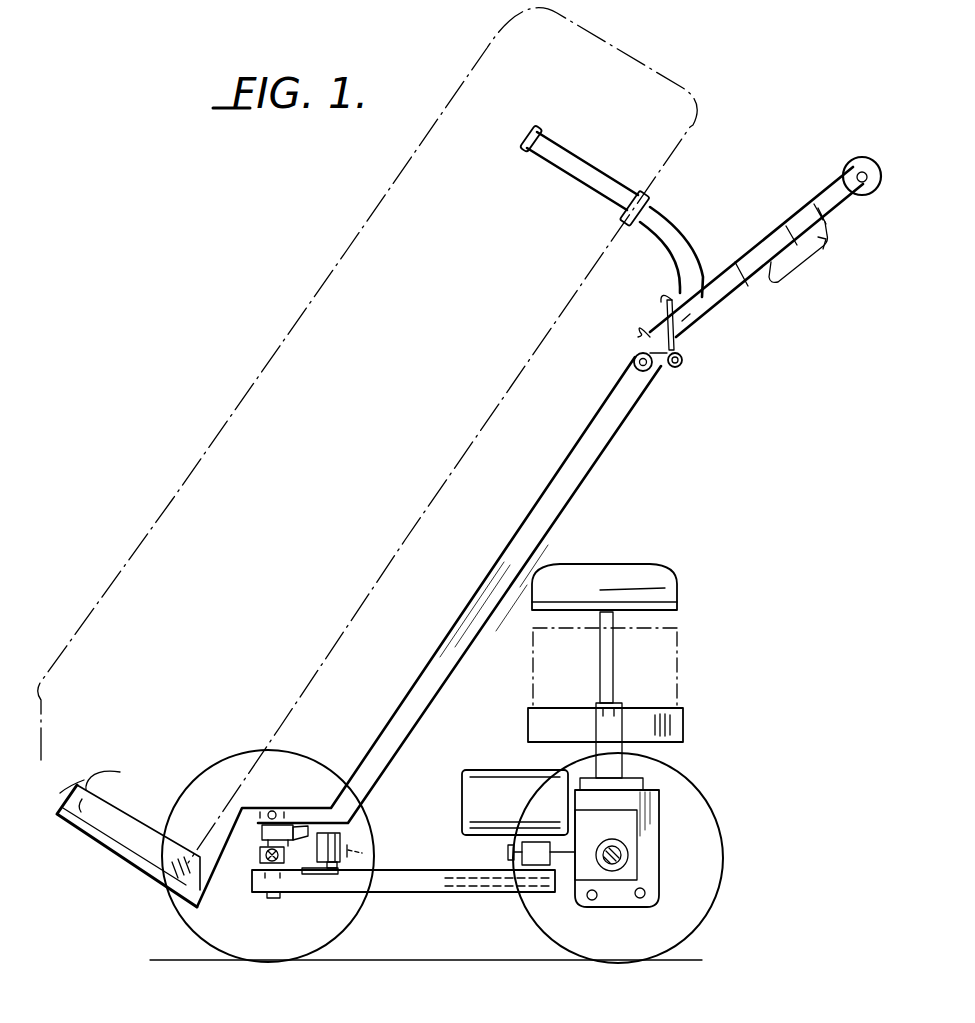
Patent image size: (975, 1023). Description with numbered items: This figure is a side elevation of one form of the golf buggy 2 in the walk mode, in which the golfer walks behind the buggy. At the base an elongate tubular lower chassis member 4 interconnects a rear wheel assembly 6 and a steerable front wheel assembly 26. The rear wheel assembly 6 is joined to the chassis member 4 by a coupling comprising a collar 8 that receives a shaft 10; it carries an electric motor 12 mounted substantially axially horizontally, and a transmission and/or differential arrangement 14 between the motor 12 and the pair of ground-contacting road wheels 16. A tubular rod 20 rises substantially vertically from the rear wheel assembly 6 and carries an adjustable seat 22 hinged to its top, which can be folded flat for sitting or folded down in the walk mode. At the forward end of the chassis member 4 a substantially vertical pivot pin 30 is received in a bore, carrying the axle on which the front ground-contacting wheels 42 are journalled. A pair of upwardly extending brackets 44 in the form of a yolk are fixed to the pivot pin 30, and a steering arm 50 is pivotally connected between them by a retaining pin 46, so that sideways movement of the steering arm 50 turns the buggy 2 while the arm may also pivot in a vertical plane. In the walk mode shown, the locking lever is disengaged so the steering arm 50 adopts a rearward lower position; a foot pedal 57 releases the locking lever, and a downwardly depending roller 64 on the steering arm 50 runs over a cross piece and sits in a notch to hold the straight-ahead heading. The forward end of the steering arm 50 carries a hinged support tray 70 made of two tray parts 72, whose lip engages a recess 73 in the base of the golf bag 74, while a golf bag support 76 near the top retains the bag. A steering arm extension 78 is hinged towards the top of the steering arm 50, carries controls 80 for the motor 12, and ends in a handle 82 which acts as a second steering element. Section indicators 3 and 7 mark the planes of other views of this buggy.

The golf buggy 2 is at (746, 120).
The section line 3- 3 is at (88, 762).
The lower chassis member 4 is at (443, 880).
The rear wheel assembly 6 is at (337, 766).
The section line 7- 7 is at (567, 762).
The collar 8 is at (535, 863).
The shaft 10 is at (565, 873).
The electric motor 12 is at (486, 784).
The transmission and/or differential arrangement 14 is at (653, 807).
The road wheels 16 is at (658, 918).
The tubular rod 20 is at (610, 753).
The adjustable seat 22 is at (657, 673).
The front wheel assembly 26 is at (178, 928).
The pivot pin 30 is at (262, 857).
The ground contacting wheels 42 is at (218, 940).
The brackets 44 is at (258, 836).
The retaining pin 46 is at (276, 811).
The steering arm 50 is at (572, 477).
The foot pedal 57 is at (378, 860).
The roller 64 is at (342, 877).
The support tray 70 is at (106, 851).
The tray parts 72 is at (152, 858).
The recess 73 is at (122, 769).
The golf bag 74 is at (268, 403).
The golf bag support 76 is at (572, 172).
The steering arm extension 78 is at (720, 302).
The controls 80 is at (802, 262).
The handle 82 is at (858, 160).